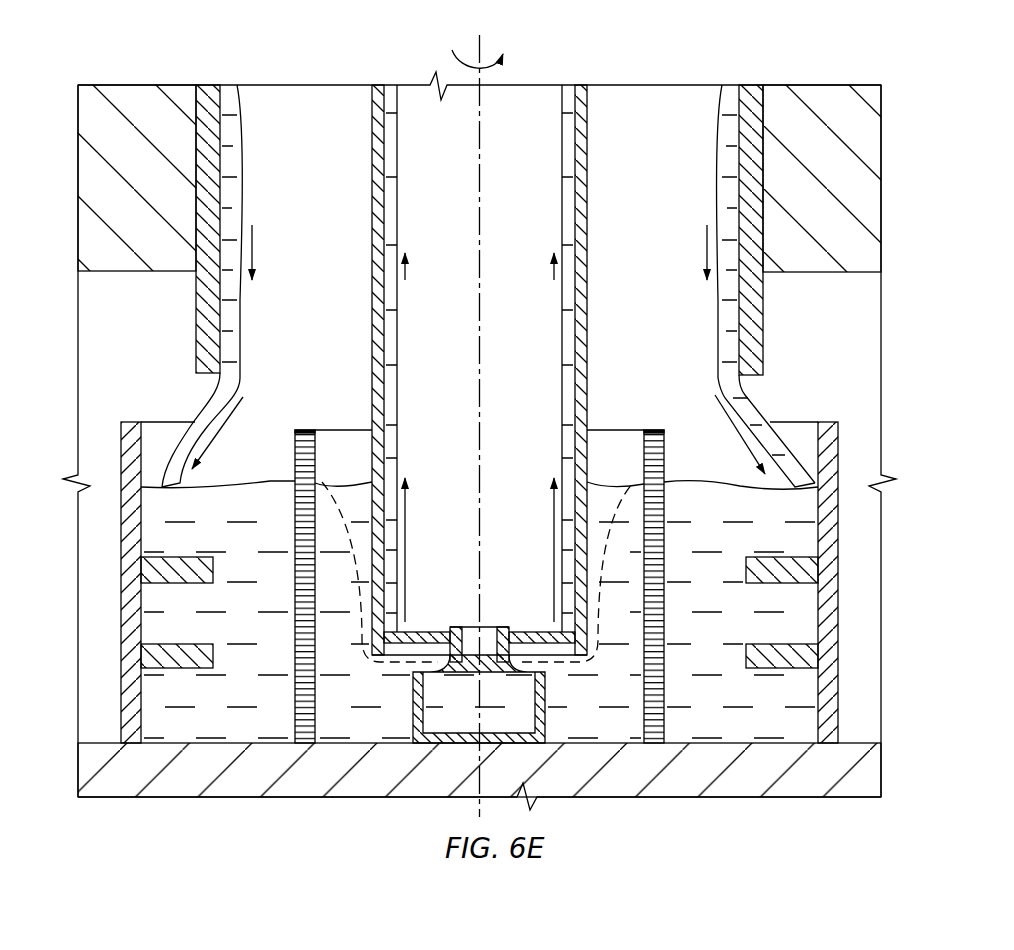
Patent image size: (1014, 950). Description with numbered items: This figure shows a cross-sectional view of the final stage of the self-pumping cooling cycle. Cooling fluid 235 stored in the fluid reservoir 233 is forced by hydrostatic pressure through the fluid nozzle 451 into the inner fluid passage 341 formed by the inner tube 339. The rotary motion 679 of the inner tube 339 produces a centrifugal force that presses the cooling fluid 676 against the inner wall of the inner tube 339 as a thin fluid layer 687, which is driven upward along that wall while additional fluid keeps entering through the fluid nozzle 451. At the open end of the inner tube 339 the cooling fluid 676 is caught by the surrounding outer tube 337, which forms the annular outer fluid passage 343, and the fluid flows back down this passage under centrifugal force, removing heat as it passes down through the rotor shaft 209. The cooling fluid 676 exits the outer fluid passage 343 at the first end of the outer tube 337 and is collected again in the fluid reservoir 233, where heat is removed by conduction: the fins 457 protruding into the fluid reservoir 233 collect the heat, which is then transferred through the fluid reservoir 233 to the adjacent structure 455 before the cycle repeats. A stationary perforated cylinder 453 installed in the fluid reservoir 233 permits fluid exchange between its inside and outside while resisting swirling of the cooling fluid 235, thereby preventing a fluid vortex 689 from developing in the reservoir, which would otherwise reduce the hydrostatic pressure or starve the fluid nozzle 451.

The rotor shaft 209 is at (848, 182).
The outer tube 337 is at (763, 108).
The inner tube 339 is at (587, 100).
The inner fluid passage 341 is at (540, 202).
The outer fluid passage 343 is at (663, 202).
The rotary motion 679 is at (505, 62).
The cooling fluid 676 is at (720, 300).
The fluid layer 687 is at (730, 333).
The stationary perforated cylinder 453 is at (295, 431).
The fluid vortex 689 is at (617, 495).
The fluid reservoir 233 is at (830, 592).
The fins 457 is at (805, 657).
The cooling fluid 235 is at (230, 704).
The fluid nozzle 451 is at (538, 689).
The adjacent structure 455 is at (755, 775).